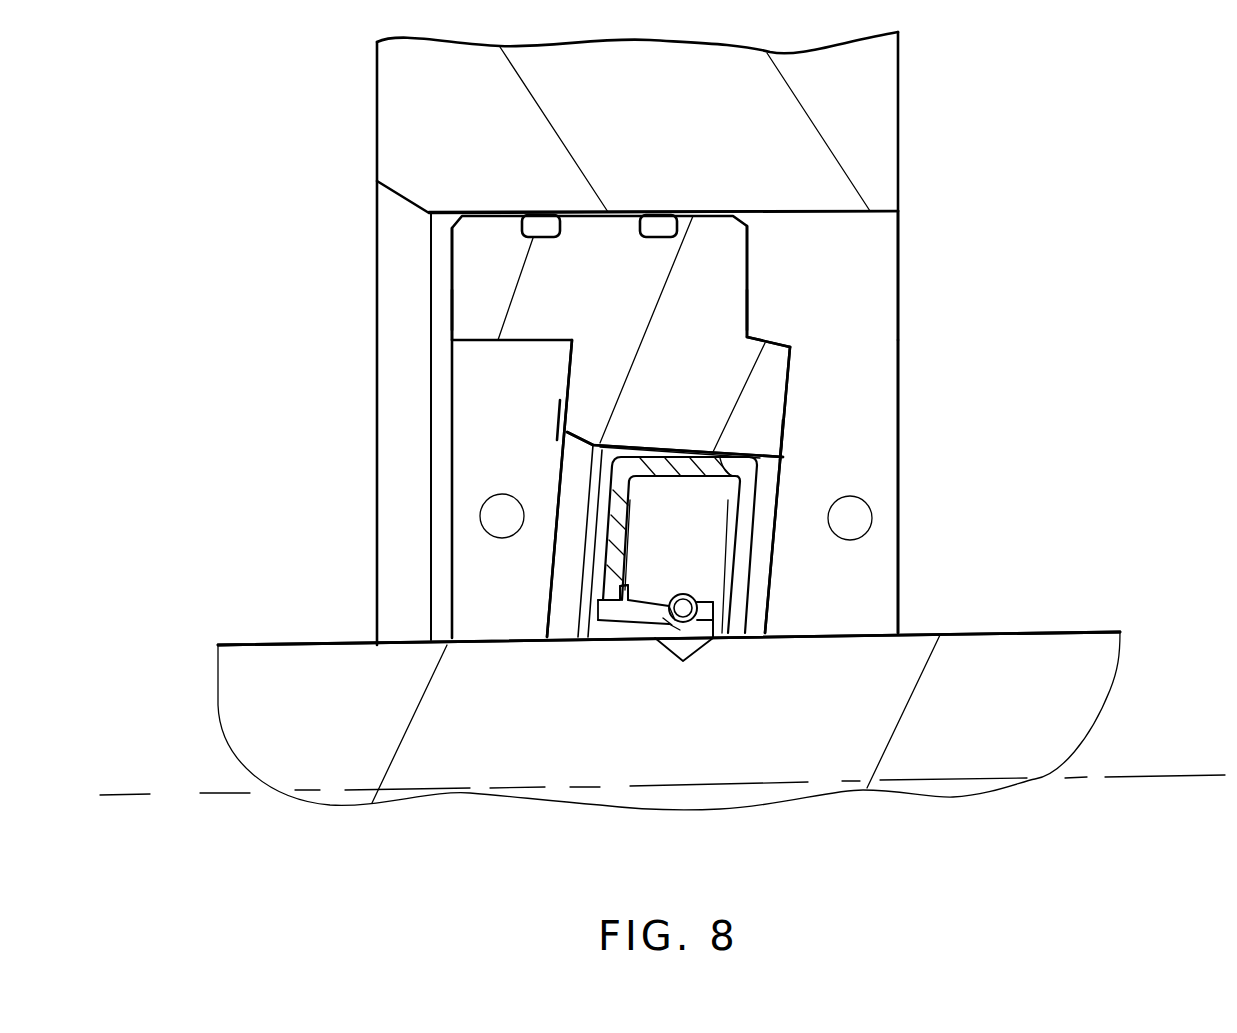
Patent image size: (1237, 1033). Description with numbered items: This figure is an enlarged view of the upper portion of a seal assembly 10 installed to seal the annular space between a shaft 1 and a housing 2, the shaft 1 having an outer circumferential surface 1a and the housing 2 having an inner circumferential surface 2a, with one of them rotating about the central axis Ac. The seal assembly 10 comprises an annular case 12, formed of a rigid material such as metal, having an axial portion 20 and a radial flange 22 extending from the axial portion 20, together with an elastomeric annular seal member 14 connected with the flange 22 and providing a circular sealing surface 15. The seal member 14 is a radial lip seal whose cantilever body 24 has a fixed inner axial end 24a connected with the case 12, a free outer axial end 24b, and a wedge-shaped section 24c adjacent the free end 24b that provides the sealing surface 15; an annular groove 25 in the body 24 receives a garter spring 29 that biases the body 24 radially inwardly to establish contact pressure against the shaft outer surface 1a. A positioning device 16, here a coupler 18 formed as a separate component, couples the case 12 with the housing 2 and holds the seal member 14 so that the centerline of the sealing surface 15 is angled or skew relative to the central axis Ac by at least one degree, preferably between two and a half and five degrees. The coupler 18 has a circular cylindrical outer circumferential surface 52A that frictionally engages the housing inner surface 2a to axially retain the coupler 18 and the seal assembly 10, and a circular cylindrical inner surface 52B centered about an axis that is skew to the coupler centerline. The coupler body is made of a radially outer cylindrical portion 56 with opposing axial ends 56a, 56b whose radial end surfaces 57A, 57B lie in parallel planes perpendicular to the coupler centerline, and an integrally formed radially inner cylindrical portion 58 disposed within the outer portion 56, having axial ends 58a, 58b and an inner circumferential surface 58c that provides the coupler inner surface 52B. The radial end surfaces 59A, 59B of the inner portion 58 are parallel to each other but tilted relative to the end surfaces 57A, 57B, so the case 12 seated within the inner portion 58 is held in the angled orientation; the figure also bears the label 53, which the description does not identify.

The shaft 1 is at (253, 645).
The outer circumferential surface 1a is at (1070, 632).
The housing 2 is at (377, 134).
The inner circumferential surface 2a is at (882, 216).
The seal assembly 10 is at (910, 494).
The annular case 12 is at (682, 440).
The annular seal member 14 is at (718, 580).
The circular sealing surface 15 is at (685, 664).
The positioning device 16 is at (878, 316).
The coupler 18 is at (858, 380).
The axial portion 20 is at (657, 460).
The radial flange 22 is at (637, 525).
The cantilever body 24 is at (633, 639).
The fixed inner axial end 24a is at (600, 599).
The free outer axial end 24b is at (720, 618).
The wedge-shaped section 24c is at (720, 640).
The annular groove 25 is at (667, 623).
The garter spring 29 is at (681, 592).
The outer circumferential surface 52A is at (596, 210).
The inner surface 52B is at (727, 472).
The step 53 is at (793, 364).
The radially outer cylindrical portion 56 is at (757, 252).
The axial end 56a is at (750, 303).
The axial end 56b is at (452, 303).
The radial end surface 57A is at (750, 272).
The radial end surface 57B is at (452, 268).
The radially inner cylindrical portion 58 is at (662, 489).
The axial end 58a is at (783, 437).
The axial end 58b is at (563, 417).
The inner circumferential surface 58c is at (600, 462).
The radial end surface 59A is at (788, 390).
The radial end surface 59B is at (565, 386).
The central axis Ac is at (1173, 775).